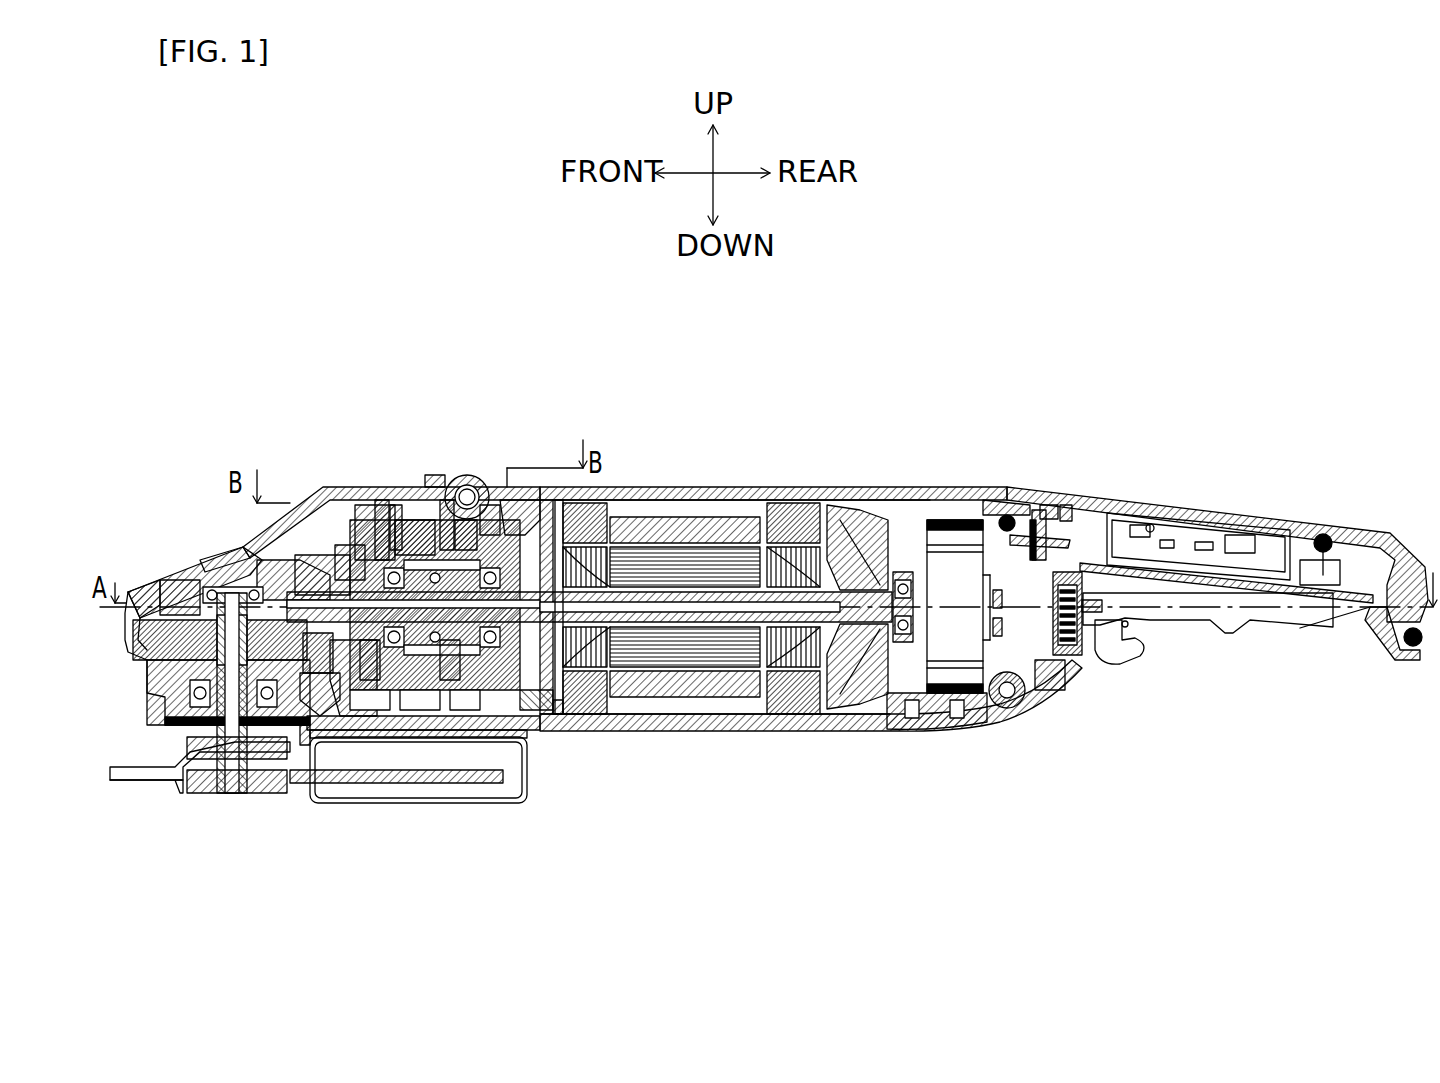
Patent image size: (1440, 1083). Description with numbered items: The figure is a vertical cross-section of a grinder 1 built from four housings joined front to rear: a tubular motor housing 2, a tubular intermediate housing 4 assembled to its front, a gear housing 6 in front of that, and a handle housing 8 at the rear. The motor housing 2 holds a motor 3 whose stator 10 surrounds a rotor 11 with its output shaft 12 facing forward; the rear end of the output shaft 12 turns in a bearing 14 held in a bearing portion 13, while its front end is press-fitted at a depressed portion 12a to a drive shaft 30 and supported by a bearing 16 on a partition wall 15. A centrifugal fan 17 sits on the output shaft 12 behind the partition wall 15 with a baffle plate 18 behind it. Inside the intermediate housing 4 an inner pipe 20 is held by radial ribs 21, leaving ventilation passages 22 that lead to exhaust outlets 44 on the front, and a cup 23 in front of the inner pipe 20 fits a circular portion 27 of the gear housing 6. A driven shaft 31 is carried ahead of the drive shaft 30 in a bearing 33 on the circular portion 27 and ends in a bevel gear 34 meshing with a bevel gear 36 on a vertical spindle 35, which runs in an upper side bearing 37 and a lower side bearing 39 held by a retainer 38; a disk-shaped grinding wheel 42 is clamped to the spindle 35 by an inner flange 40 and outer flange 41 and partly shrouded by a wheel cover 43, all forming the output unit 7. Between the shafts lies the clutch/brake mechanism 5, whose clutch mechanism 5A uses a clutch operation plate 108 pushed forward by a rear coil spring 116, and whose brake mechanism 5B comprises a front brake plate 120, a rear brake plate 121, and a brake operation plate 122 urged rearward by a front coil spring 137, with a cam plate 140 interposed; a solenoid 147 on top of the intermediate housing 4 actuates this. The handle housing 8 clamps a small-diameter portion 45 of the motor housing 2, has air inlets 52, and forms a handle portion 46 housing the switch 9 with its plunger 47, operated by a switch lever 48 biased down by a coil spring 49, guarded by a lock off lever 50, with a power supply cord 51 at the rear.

The grinder 1 is at (858, 395).
The motor housing 2 is at (805, 487).
The motor 3 is at (730, 503).
The intermediate housing 4 is at (535, 492).
The clutch/brake mechanism 5 is at (442, 500).
The clutch mechanism 5A is at (467, 475).
The brake mechanism 5B is at (380, 510).
The gear housing 6 is at (160, 600).
The output unit 7 is at (240, 560).
The handle housing 8 is at (1020, 487).
The switch 9 is at (1177, 530).
The stator 10 is at (695, 517).
The rotor 11 is at (740, 590).
The output shaft 12 is at (640, 540).
The depressed portion 12a is at (600, 640).
The bearing portion 13 is at (935, 520).
The bearing 14 is at (860, 530).
The partition wall 15 is at (600, 520).
The bearing 16 is at (482, 690).
The centrifugal fan 17 is at (528, 745).
The baffle plate 18 is at (560, 714).
The inner pipe 20 is at (430, 690).
The ribs 21 is at (465, 690).
The ventilation passages 22 is at (400, 690).
The cup 23 is at (360, 640).
The circular portion 27 is at (335, 575).
The drive shaft 30 is at (580, 700).
The driven shaft 31 is at (285, 650).
The bearing 33 is at (320, 670).
The bevel gear 34 is at (300, 700).
The spindle 35 is at (178, 615).
The bevel gear 36 is at (137, 625).
The upper side bearing 37 is at (195, 635).
The retainer 38 is at (150, 690).
The lower side bearing 39 is at (190, 724).
The inner flange 40 is at (200, 760).
The outer flange 41 is at (210, 793).
The disk-shaped grinding wheel 42 is at (118, 782).
The wheel cover 43 is at (518, 745).
The exhaust outlets 44 is at (245, 580).
The small-diameter portion 45 is at (1000, 510).
The handle portion 46 is at (1305, 535).
The plunger 47 is at (1188, 600).
The switch lever 48 is at (1215, 625).
The coil spring 49 is at (1130, 600).
The lock off lever 50 is at (1120, 655).
The power supply cord 51 is at (1425, 570).
The air inlets 52 is at (1036, 540).
The clutch operation plate 108 is at (466, 520).
The rear coil spring 116 is at (455, 680).
The front brake plate 120 is at (345, 555).
The rear brake plate 121 is at (520, 515).
The brake operation plate 122 is at (396, 520).
The front coil spring 137 is at (380, 680).
The cam plate 140 is at (405, 525).
The solenoid 147 is at (488, 510).